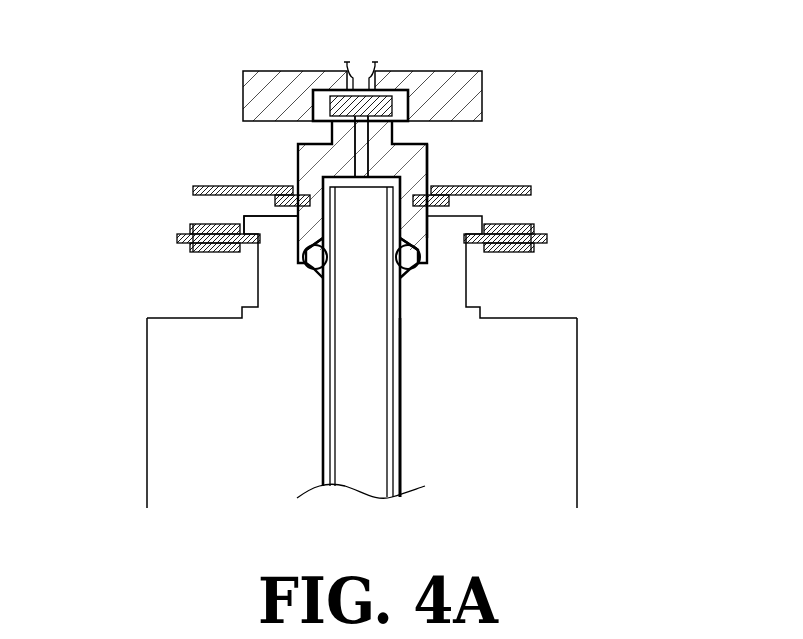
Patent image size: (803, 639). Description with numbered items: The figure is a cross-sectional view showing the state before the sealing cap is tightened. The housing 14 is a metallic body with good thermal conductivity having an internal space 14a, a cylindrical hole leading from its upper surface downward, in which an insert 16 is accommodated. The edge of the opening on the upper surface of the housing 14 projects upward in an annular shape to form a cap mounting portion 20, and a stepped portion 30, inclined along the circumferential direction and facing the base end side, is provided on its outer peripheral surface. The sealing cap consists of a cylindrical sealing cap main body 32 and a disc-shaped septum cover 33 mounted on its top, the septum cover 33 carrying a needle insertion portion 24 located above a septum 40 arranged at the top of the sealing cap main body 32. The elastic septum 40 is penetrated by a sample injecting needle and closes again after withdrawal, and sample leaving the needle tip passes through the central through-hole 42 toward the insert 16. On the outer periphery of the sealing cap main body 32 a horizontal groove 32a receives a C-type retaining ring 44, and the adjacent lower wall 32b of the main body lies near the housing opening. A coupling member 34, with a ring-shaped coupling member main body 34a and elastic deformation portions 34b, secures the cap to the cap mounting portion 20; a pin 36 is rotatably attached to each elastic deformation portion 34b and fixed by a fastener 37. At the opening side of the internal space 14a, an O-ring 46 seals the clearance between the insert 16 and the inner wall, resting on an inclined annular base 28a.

The housing 14 is at (577, 397).
The internal space 14a is at (400, 428).
The insert 16 is at (377, 345).
The cap mounting portion 20 is at (262, 280).
The needle insertion portion 24 is at (371, 62).
The base 28a is at (405, 272).
The stepped portion 30 is at (250, 222).
The sealing cap main body 32 is at (428, 150).
The horizontal groove 32a is at (427, 185).
The lower wall of support body 32b is at (410, 235).
The septum cover 33 is at (473, 82).
The coupling member 34 is at (92, 180).
The coupling member main body 34a is at (192, 190).
The elastic deformation portion 34b is at (190, 227).
The pin 36 is at (190, 250).
The fastener 37 is at (188, 244).
The septum 40 is at (342, 98).
The through-hole 42 is at (360, 158).
The C-type retaining ring 44 is at (467, 188).
The O-ring 46 is at (410, 258).